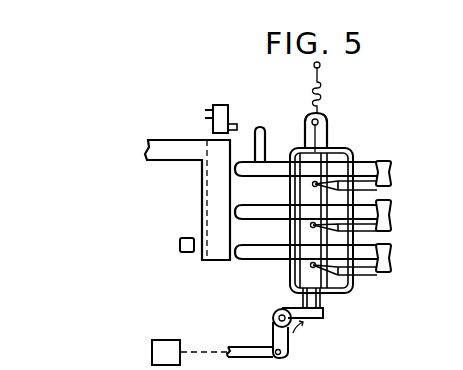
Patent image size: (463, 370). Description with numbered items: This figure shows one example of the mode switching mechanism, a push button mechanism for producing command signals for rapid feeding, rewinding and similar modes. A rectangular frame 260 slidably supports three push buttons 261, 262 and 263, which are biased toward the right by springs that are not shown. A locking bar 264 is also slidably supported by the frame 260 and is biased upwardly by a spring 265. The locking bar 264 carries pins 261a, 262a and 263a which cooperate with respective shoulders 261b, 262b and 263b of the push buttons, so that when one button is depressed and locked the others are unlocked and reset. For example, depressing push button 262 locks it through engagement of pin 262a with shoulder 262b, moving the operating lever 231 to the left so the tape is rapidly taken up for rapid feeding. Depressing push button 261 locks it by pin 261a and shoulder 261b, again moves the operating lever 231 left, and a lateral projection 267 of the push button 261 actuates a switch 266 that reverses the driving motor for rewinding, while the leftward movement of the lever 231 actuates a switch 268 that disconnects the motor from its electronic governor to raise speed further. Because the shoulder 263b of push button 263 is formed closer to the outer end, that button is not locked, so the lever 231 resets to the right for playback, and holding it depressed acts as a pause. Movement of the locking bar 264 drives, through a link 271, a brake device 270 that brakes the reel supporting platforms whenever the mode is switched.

The operating lever 231 is at (163, 147).
The rectangular frame 260 is at (338, 150).
The push button 261 is at (369, 174).
The pin 261a is at (315, 184).
The shoulder 261b is at (390, 188).
The push button 262 is at (367, 219).
The pin 262a is at (305, 226).
The shoulder 262b is at (390, 231).
The push button 263 is at (390, 265).
The pin 263a is at (316, 268).
The shoulder 263b is at (363, 275).
The locking bar 264 is at (327, 127).
The spring 265 is at (325, 79).
The switch 266 is at (218, 104).
The lateral projection 267 is at (258, 120).
The switch 268 is at (178, 248).
The brake device 270 is at (153, 347).
The link 271 is at (248, 352).